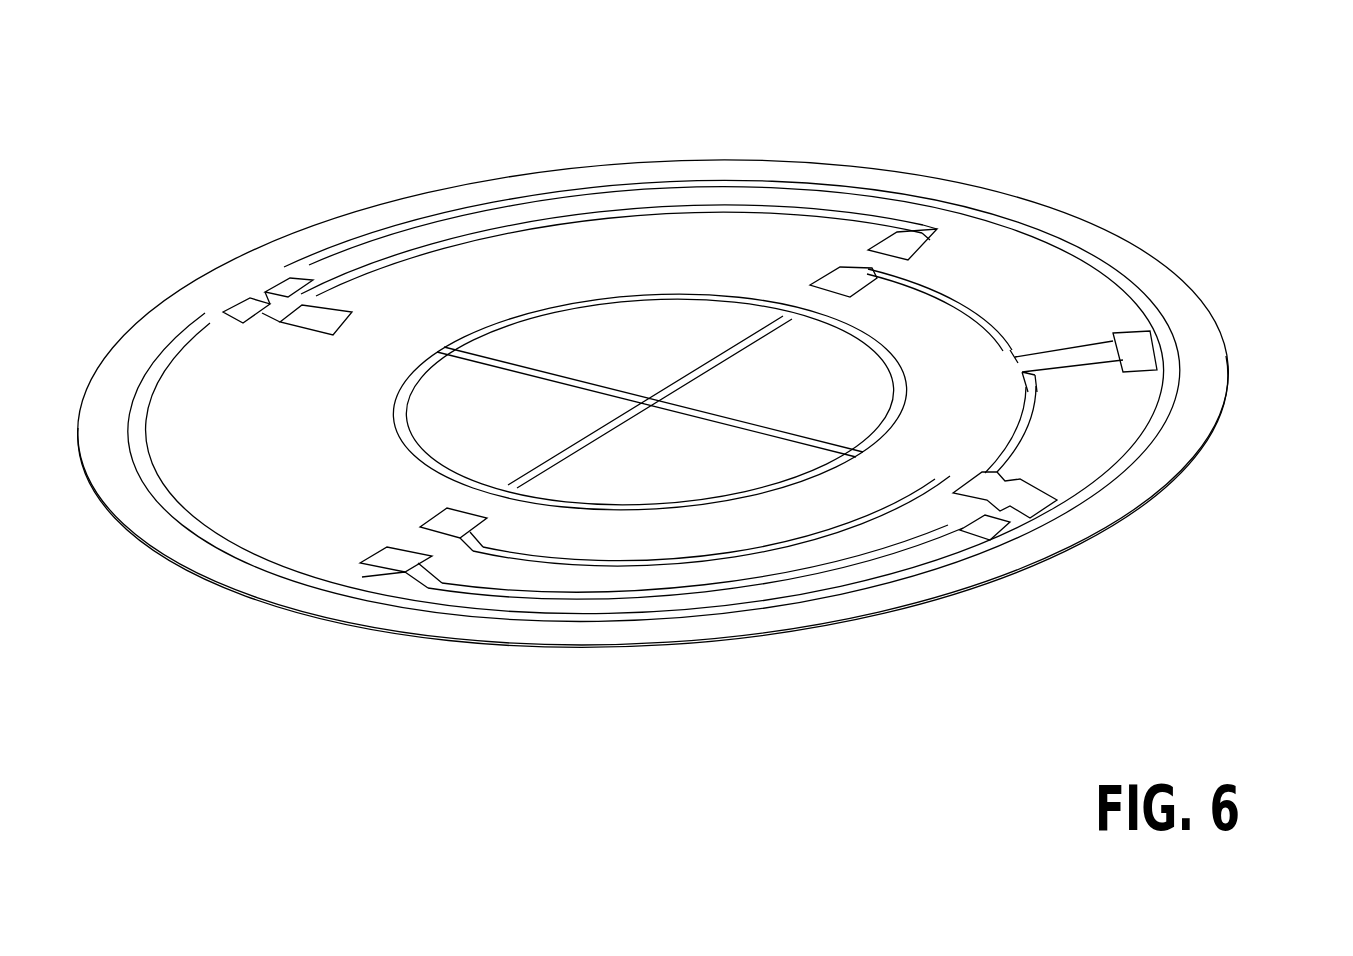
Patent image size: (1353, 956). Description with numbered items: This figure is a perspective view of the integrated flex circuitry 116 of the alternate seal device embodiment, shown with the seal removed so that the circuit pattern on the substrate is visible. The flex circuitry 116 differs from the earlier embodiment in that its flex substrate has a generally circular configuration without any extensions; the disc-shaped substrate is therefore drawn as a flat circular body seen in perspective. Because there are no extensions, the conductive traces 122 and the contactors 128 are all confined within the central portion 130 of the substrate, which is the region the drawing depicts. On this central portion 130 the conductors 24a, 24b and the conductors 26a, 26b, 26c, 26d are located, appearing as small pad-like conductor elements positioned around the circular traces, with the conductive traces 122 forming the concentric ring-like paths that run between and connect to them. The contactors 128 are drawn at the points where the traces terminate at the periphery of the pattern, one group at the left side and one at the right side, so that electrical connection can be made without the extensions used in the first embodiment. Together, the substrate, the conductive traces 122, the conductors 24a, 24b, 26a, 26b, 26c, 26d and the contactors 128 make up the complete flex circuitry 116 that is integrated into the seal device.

The flex circuitry 116 is at (950, 128).
The conductive traces 122 is at (827, 567).
The contactors 128 is at (273, 290).
The central portion 130 is at (683, 237).
The conductor 24a is at (837, 278).
The conductor 24b is at (450, 518).
The conductor 26a is at (913, 247).
The conductor 26b is at (1000, 478).
The conductor 26c is at (383, 552).
The conductor 26d is at (330, 320).